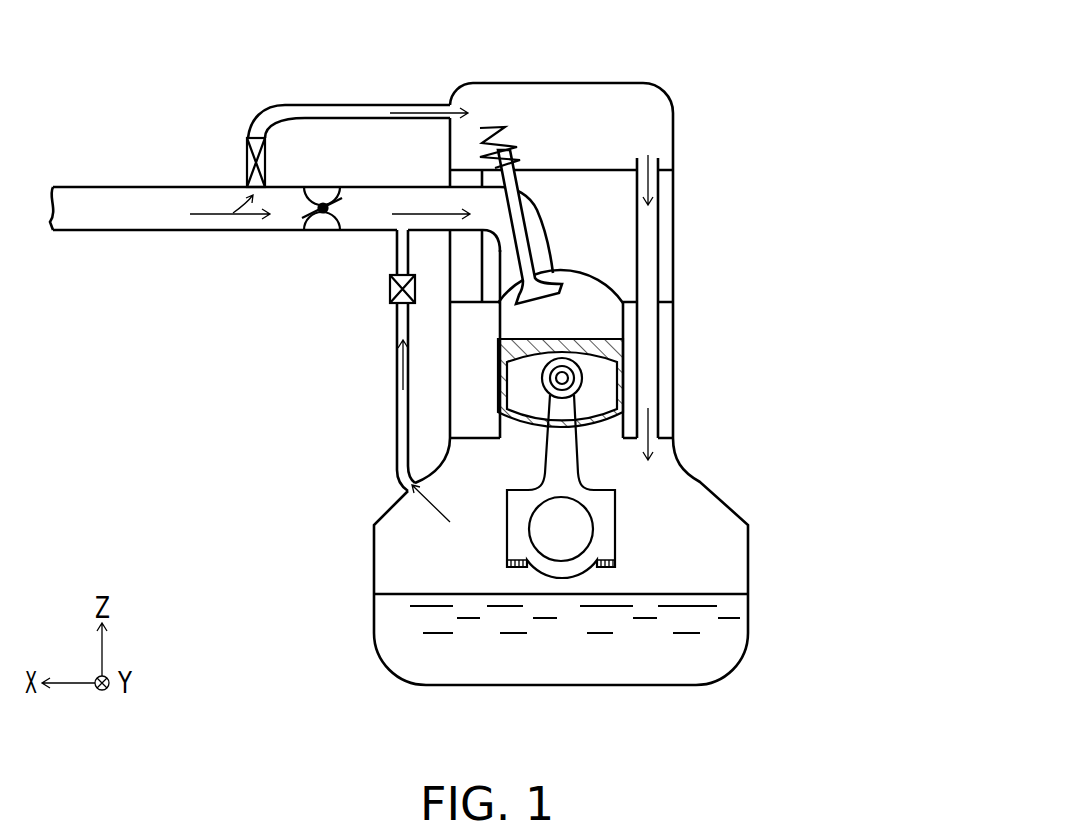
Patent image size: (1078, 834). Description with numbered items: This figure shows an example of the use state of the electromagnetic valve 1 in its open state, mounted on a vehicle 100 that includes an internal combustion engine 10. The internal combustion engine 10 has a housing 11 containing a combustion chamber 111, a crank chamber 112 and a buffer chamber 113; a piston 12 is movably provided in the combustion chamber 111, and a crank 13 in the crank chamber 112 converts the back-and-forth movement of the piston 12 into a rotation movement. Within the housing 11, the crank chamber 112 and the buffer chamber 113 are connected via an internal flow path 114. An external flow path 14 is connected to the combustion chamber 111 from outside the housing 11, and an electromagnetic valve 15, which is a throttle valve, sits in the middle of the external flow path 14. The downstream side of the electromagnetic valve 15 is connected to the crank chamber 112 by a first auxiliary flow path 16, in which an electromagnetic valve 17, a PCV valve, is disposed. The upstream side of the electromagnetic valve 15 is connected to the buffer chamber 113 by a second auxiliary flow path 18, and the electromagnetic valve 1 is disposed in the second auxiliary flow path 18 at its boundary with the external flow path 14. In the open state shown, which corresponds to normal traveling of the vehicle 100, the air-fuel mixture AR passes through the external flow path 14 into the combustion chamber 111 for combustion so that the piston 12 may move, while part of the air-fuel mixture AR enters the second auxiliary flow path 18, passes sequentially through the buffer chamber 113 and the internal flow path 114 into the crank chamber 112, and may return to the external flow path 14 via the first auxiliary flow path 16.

The vehicle 100 is at (843, 43).
The internal combustion engine 10 is at (768, 138).
The housing 11 is at (698, 472).
The piston 12 is at (628, 379).
The crank 13 is at (617, 508).
The external flow path 14 is at (123, 187).
The electromagnetic valve 15 is at (323, 232).
The first auxiliary flow path 16 is at (397, 420).
The electromagnetic valve 17 is at (391, 292).
The second auxiliary flow path 18 is at (383, 105).
The electromagnetic valve 1 is at (246, 137).
The combustion chamber 111 is at (600, 316).
The crank chamber 112 is at (710, 563).
The buffer chamber 113 is at (636, 113).
The internal flow path 114 is at (660, 232).
The air-fuel mixture AR is at (446, 100).